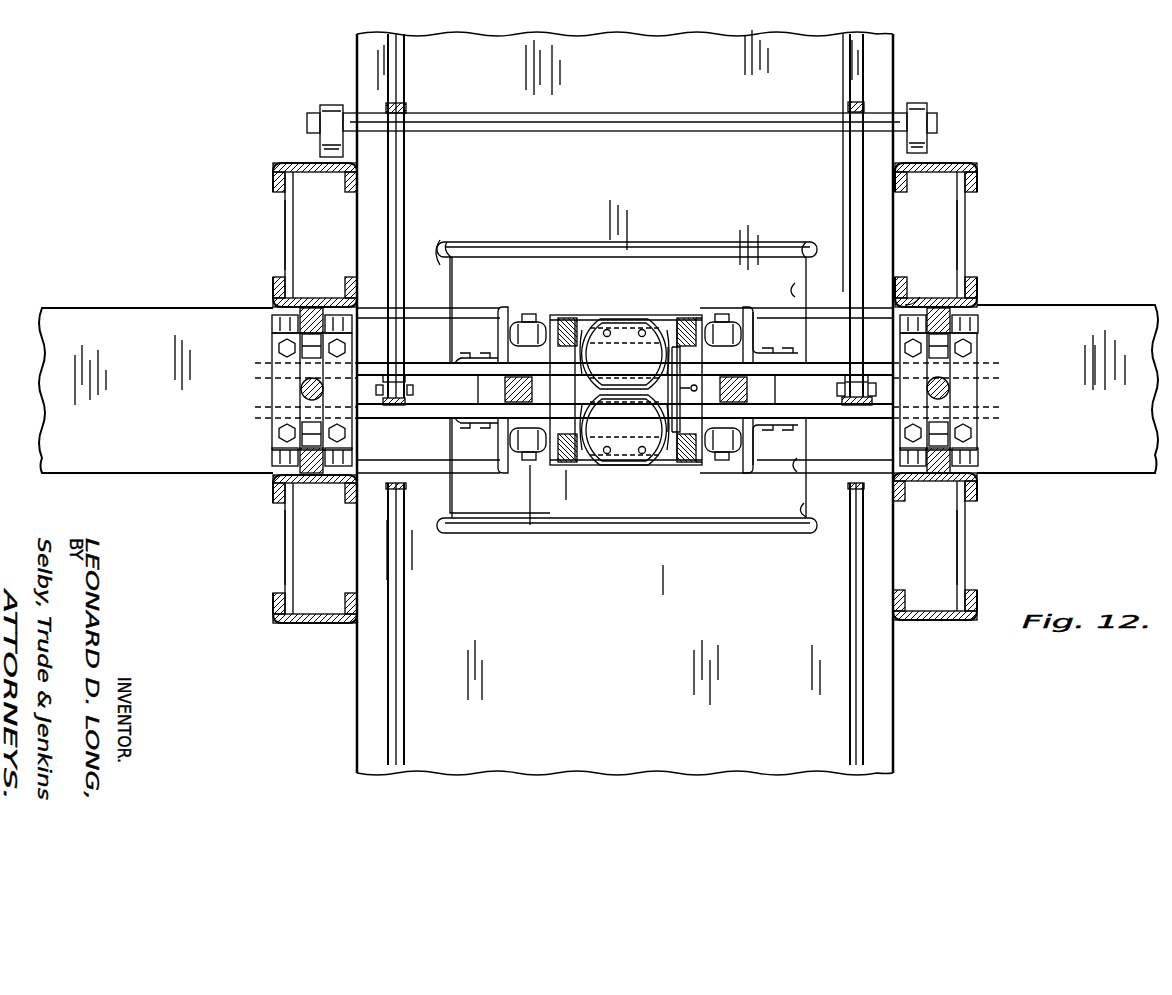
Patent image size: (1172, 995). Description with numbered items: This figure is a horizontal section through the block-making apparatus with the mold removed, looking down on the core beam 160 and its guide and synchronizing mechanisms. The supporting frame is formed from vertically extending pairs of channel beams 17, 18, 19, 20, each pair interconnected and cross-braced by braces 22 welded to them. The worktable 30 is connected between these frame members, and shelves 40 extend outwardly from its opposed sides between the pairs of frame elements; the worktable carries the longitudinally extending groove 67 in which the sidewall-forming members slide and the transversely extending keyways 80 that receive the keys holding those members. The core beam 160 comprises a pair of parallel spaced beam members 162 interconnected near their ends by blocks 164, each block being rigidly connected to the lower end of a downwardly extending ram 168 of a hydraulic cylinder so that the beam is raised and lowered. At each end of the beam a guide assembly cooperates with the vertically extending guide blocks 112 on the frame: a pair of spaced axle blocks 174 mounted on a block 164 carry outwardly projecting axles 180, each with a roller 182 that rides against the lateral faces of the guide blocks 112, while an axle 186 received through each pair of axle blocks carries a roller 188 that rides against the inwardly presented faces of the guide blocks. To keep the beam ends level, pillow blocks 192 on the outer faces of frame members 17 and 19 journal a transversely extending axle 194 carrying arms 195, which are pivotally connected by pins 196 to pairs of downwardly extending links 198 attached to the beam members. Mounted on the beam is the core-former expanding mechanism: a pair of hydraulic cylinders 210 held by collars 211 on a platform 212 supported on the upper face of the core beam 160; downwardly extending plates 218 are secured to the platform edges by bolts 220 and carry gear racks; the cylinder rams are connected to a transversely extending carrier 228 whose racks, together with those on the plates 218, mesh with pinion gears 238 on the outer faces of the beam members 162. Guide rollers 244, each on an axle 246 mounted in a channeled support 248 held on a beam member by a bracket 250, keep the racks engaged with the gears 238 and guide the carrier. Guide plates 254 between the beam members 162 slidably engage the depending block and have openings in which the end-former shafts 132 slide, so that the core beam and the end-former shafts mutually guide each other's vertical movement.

The channel beam 17 is at (273, 180).
The channel beam 18 is at (318, 623).
The channel beam 19 is at (975, 186).
The channel beam 20 is at (945, 622).
The brace 22 is at (280, 240).
The worktable 30 is at (638, 187).
The shelf 40 is at (180, 432).
The longitudinally extending groove 67 is at (452, 253).
The keyway 80 is at (452, 247).
The guide block 112 is at (935, 307).
The end-former shaft 132 is at (748, 393).
The core beam 160 is at (422, 342).
The beam member 162 is at (436, 320).
The block 164 is at (946, 381).
The ram 168 is at (300, 388).
The axle block 174 is at (272, 394).
The axle 180 is at (332, 302).
The roller 182 is at (272, 322).
The axle 186 is at (302, 313).
The roller 188 is at (302, 418).
The pillow block 192 is at (326, 106).
The axle 194 is at (937, 121).
The arm 195 is at (404, 186).
The pin 196 is at (415, 392).
The link 198 is at (390, 406).
The hydraulic cylinder 210 is at (616, 458).
The collar 211 is at (649, 458).
The platform 212 is at (592, 324).
The plate 218 is at (635, 320).
The bolt 220 is at (665, 323).
The carrier 228 is at (565, 319).
The pinion gear 238 is at (700, 320).
The guide roller 244 is at (508, 321).
The axle 246 is at (724, 462).
The channeled support 248 is at (746, 310).
The bracket 250 is at (758, 332).
The guide plate 254 is at (485, 410).